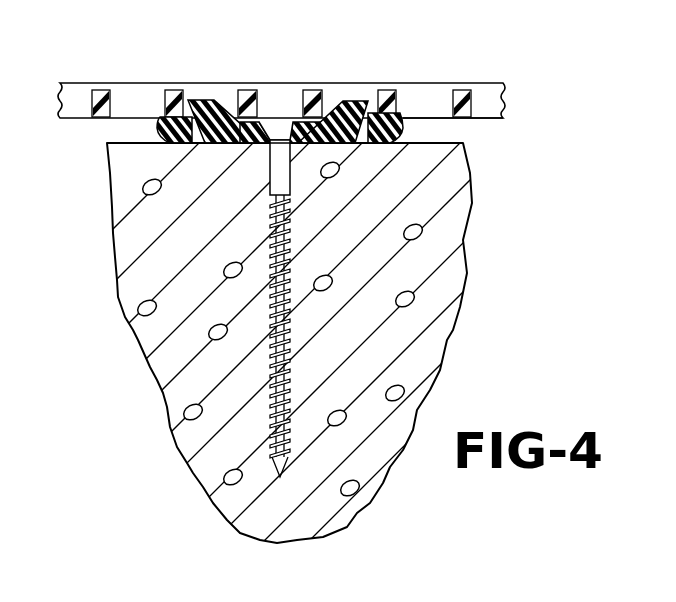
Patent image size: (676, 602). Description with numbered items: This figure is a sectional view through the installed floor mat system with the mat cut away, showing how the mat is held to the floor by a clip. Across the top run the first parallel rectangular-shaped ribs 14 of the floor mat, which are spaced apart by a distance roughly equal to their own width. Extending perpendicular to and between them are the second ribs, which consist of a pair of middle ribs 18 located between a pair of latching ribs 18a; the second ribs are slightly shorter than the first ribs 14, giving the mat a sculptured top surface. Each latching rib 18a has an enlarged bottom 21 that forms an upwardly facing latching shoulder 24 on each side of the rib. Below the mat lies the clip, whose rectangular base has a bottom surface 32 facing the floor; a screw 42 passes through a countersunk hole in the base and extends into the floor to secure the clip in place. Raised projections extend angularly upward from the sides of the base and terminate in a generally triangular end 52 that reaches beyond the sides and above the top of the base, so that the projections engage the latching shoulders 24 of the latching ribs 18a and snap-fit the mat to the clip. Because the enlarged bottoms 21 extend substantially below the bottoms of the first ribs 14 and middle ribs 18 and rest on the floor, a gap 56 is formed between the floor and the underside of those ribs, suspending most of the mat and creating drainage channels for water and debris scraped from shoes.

The first parallel rectangular-shaped ribs 14 is at (488, 85).
The middle ribs 18 is at (245, 92).
The latching ribs 18a is at (173, 90).
The enlarged bottom 21 is at (168, 133).
The latching shoulder 24 is at (164, 132).
The bottom surface 32 is at (338, 142).
The screw 42 is at (282, 132).
The triangular end 52 is at (398, 122).
The gap 56 is at (445, 128).